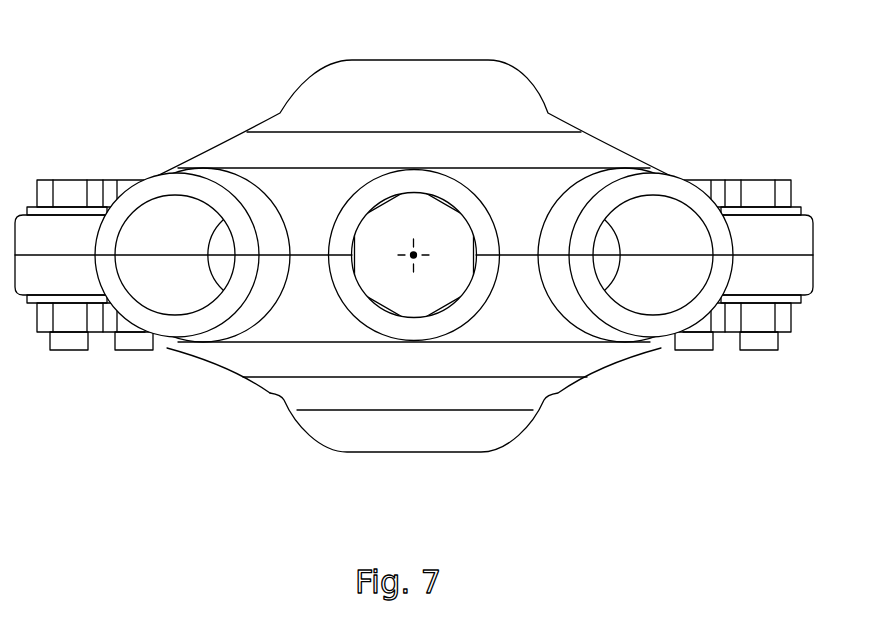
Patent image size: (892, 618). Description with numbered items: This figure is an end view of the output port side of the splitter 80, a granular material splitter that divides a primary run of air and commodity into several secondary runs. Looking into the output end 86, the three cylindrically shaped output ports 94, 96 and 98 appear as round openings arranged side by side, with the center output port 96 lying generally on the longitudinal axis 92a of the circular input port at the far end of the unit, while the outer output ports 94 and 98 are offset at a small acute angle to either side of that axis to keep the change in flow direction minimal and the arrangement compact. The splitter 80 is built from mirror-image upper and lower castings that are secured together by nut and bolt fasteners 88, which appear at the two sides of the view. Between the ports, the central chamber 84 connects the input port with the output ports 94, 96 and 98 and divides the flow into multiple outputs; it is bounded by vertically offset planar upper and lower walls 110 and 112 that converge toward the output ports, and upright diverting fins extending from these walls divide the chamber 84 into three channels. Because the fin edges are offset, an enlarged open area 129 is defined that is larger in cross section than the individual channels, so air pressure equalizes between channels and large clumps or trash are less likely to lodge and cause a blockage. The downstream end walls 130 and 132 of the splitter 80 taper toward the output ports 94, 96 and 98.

The splitter 80 is at (630, 100).
The central chamber 84 is at (388, 237).
The output end 86 is at (265, 332).
The fasteners 88 is at (126, 183).
The longitudinal axis of input port 92a is at (416, 252).
The output port 94 is at (176, 330).
The output port 96 is at (447, 322).
The output port 98 is at (657, 330).
The upper wall 110 is at (262, 155).
The lower wall 112 is at (415, 360).
The enlarged open area 129 is at (390, 222).
The downstream end wall 130 is at (291, 204).
The downstream end wall 132 is at (288, 332).